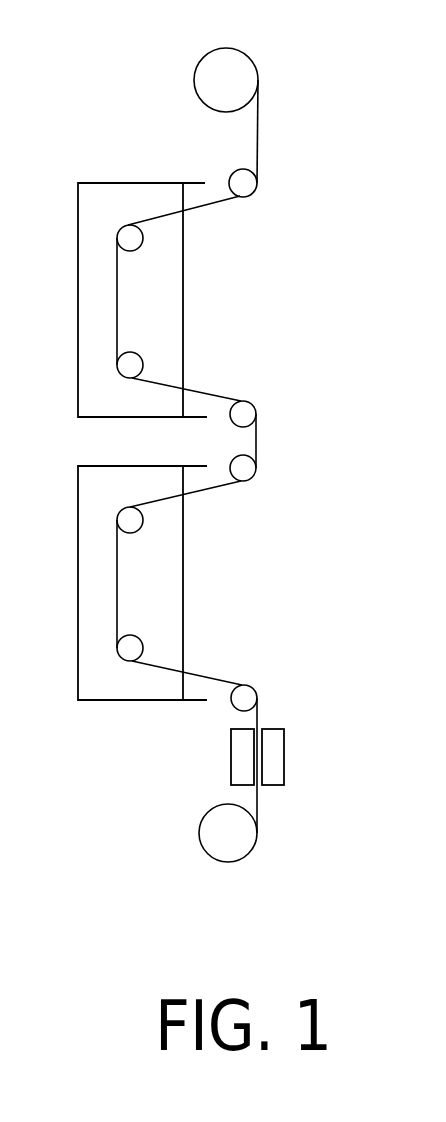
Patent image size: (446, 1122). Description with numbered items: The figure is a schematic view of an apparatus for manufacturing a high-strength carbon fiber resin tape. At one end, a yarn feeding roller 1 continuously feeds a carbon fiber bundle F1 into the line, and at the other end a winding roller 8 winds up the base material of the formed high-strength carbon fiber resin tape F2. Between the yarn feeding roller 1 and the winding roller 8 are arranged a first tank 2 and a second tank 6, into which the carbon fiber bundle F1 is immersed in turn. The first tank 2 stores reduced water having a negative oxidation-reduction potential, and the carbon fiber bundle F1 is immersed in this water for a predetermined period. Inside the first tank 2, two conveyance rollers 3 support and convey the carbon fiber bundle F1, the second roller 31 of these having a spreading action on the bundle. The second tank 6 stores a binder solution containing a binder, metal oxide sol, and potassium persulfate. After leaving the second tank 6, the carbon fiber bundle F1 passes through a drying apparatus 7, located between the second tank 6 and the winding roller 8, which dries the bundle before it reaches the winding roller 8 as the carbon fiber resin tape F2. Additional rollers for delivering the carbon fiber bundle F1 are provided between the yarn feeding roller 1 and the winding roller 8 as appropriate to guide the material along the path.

The yarn feeding roller 1 is at (210, 63).
The first tank 2 is at (137, 182).
The conveyance rollers 3 is at (122, 232).
The second roller 31 is at (122, 370).
The second tank 6 is at (143, 700).
The drying apparatus 7 is at (284, 768).
The winding roller 8 is at (210, 848).
The carbon fiber bundle F1 is at (258, 125).
The high-strength carbon fiber resin tape F2 is at (258, 800).